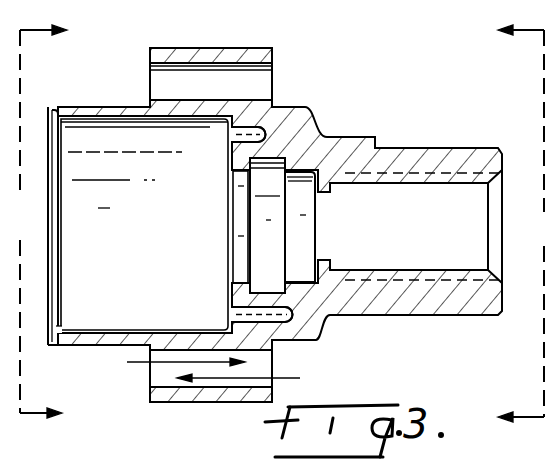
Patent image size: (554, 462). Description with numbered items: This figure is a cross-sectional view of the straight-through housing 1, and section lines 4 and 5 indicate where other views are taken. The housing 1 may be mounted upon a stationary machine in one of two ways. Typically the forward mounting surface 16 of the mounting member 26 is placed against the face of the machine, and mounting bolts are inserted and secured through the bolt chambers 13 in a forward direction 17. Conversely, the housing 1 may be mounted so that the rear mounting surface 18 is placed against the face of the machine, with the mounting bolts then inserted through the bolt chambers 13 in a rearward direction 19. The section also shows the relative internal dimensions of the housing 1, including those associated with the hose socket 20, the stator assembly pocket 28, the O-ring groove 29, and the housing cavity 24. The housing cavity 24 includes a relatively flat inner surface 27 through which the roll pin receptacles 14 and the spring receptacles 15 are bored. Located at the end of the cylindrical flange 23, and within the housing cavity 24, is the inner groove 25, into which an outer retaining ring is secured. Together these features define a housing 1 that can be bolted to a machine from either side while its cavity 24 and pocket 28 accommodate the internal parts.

The straight-through housing 1 is at (467, 322).
The section line 4- 4 is at (37, 221).
The section line 5- 5 is at (523, 223).
The bolt chambers 13 is at (266, 85).
The roll pin receptacles 14 is at (229, 142).
The spring receptacles 15 is at (231, 316).
The forward mounting surface 16 is at (151, 393).
The forward direction 17 is at (257, 383).
The rear mounting surface 18 is at (275, 52).
The rearward direction 19 is at (169, 366).
The hose socket 20 is at (475, 221).
The cylindrical flange 23 is at (80, 349).
The housing cavity 24 is at (113, 142).
The inner groove 25 is at (63, 327).
The mounting member 26 is at (217, 407).
The inner surface 27 is at (232, 168).
The stator assembly pocket 28 is at (297, 230).
The O-ring groove 29 is at (267, 281).